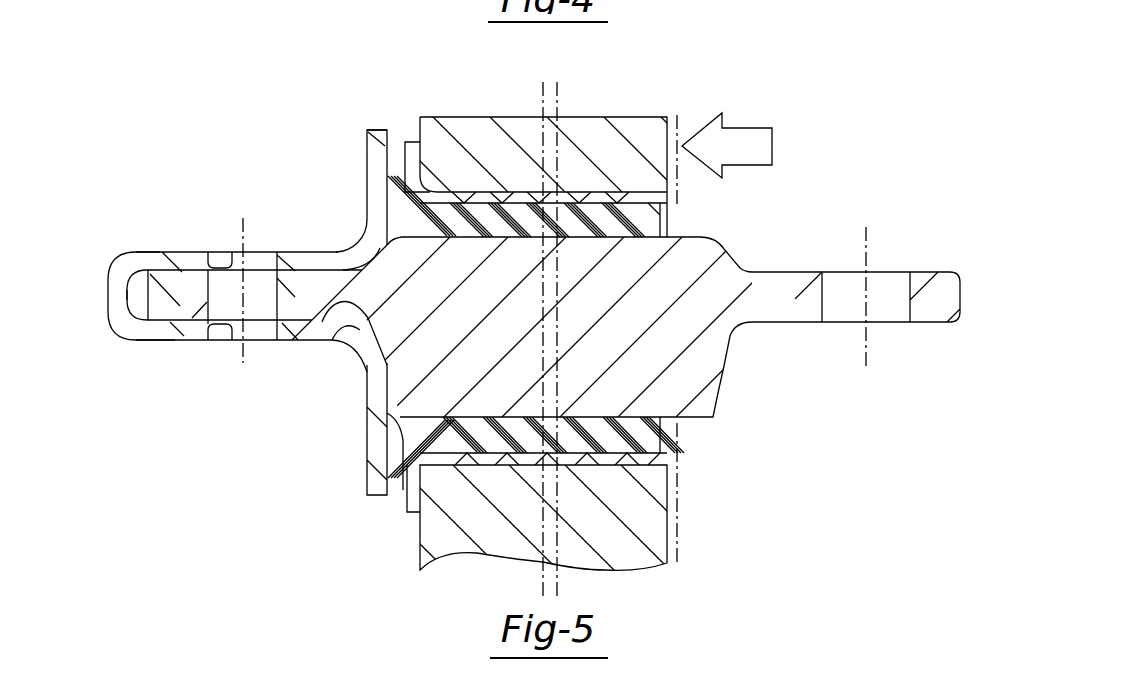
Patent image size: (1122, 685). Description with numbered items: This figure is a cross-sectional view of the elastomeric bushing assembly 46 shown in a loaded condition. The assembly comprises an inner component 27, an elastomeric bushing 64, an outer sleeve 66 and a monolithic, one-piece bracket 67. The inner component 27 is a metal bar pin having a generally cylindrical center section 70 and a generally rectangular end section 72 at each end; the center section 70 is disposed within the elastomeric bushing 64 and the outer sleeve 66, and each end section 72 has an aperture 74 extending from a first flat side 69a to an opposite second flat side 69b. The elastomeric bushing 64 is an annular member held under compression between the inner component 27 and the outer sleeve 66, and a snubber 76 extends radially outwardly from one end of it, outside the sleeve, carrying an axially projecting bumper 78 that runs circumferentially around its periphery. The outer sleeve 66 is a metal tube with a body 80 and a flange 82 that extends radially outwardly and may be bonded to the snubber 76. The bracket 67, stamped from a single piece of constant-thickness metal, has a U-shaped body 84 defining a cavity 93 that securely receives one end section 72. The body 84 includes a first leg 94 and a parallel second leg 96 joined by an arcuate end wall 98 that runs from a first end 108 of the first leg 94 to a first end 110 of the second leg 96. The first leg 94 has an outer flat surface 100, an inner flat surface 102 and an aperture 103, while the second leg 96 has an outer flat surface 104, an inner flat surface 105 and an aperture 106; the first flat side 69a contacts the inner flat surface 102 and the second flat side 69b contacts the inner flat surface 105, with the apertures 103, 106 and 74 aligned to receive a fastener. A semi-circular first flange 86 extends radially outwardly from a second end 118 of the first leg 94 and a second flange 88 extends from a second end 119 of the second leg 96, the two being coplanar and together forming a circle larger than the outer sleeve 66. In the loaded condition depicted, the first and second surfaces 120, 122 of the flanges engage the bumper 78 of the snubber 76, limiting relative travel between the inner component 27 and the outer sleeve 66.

The inner component 27 is at (776, 262).
The elastomeric bushing assembly 46 is at (705, 75).
The elastomeric bushing 64 is at (672, 225).
The outer sleeve 66 is at (576, 183).
The bracket 67 is at (320, 242).
The first flat side 69a is at (912, 270).
The second flat side 69b is at (930, 323).
The center section 70 is at (703, 400).
The end section 72 is at (802, 290).
The aperture 74 is at (823, 300).
The snubber 76 is at (400, 168).
The bumper 78 is at (368, 160).
The body 80 is at (650, 203).
The flange 82 is at (418, 150).
The body 84 is at (125, 240).
The first flange 86 is at (372, 128).
The second flange 88 is at (375, 490).
The cavity 93 is at (135, 310).
The first leg 94 is at (154, 242).
The second leg 96 is at (157, 348).
The arcuate end wall 98 is at (113, 293).
The outer flat surface 100 is at (290, 251).
The inner flat surface 102 is at (165, 285).
The aperture 103 is at (233, 248).
The outer flat surface 104 is at (147, 340).
The inner flat surface 105 is at (345, 322).
The aperture 106 is at (213, 335).
The first end 108 is at (138, 247).
The first end 110 is at (137, 333).
The second end 118 is at (345, 240).
The second end 119 is at (336, 343).
The first surface 120 is at (406, 143).
The second surface 122 is at (432, 478).